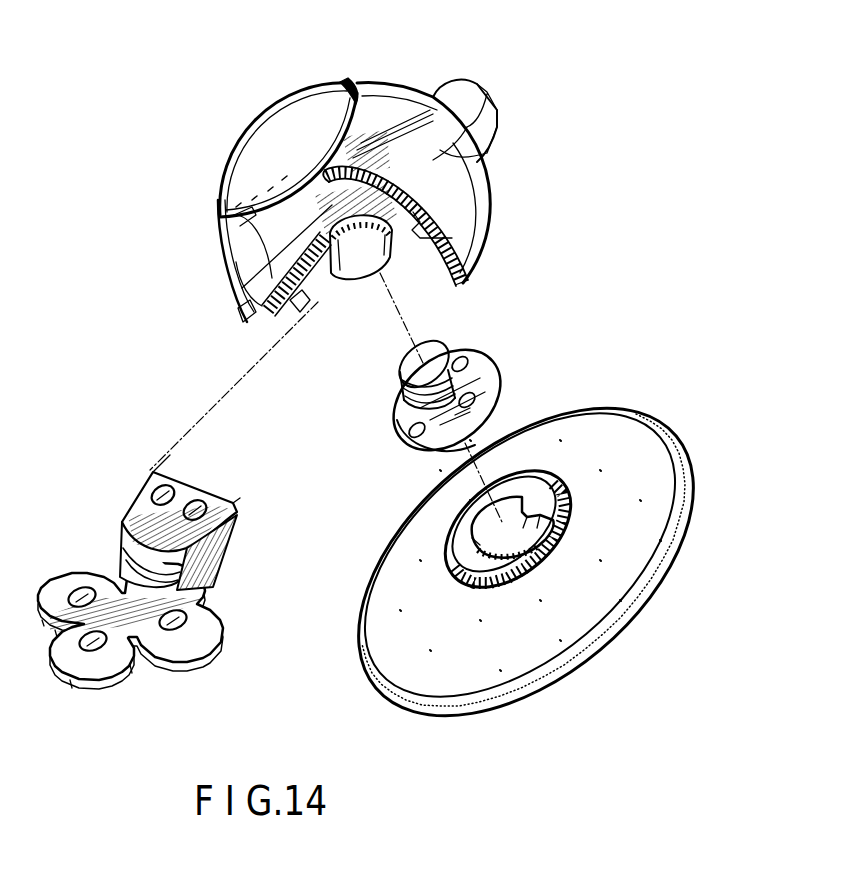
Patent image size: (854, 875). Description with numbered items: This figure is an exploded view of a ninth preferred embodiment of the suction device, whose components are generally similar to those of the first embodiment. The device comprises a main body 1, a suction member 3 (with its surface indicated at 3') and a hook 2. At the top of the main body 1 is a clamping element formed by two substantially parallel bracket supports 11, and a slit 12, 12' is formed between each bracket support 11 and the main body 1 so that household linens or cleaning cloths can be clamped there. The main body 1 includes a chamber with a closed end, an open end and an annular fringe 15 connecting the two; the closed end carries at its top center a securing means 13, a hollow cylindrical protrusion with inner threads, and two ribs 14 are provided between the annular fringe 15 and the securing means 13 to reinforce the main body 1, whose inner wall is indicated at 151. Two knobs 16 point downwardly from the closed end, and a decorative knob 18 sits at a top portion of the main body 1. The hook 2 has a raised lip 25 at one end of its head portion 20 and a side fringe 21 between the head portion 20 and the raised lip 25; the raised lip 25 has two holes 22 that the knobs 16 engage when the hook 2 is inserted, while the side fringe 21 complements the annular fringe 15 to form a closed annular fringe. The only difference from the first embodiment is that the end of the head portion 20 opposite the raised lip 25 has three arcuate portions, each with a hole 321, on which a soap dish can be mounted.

The main body 1 is at (398, 74).
The bracket supports 11 is at (353, 152).
The slit 12 is at (212, 261).
The slit 12' is at (451, 226).
The securing means 13 is at (344, 282).
The ribs 14 is at (243, 318).
The annular fringe 15 is at (462, 257).
The inner wall 151 is at (238, 290).
The knobs 16 is at (307, 303).
The decorative knob 18 is at (492, 130).
The hook 2 is at (110, 548).
The head portion 20 is at (110, 590).
The side fringe 21 is at (213, 575).
The holes 22 is at (208, 495).
The raised lip 25 is at (140, 507).
The suction member 3 is at (526, 547).
The disc surface 3' is at (530, 494).
The hole 321 is at (167, 630).